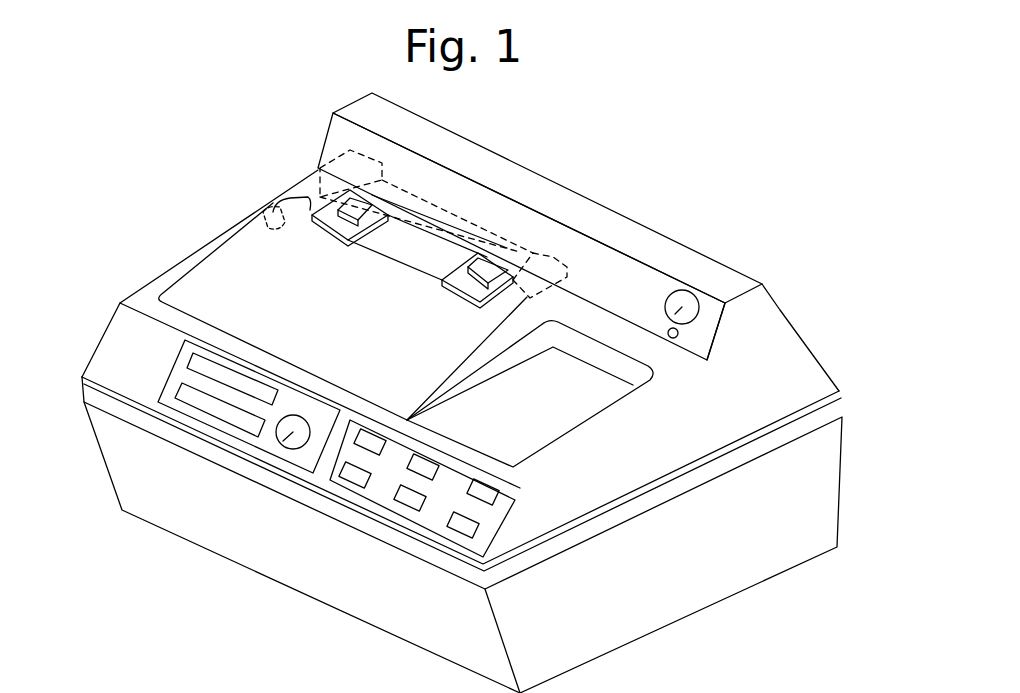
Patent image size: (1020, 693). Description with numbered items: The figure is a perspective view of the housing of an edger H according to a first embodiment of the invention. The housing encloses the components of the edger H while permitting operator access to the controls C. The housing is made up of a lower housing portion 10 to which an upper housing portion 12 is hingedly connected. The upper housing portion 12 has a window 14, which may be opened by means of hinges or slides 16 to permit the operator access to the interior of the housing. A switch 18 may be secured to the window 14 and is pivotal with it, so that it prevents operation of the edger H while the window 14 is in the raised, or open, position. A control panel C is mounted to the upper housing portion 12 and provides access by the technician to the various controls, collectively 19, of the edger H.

The lower housing portion 10 is at (738, 558).
The upper housing portion 12 is at (760, 343).
The window 14 is at (213, 287).
The hinges or slides 16 is at (372, 195).
The switch 18 is at (273, 212).
The controls 19 is at (370, 442).
The edger H is at (647, 224).
The control panel C is at (143, 352).